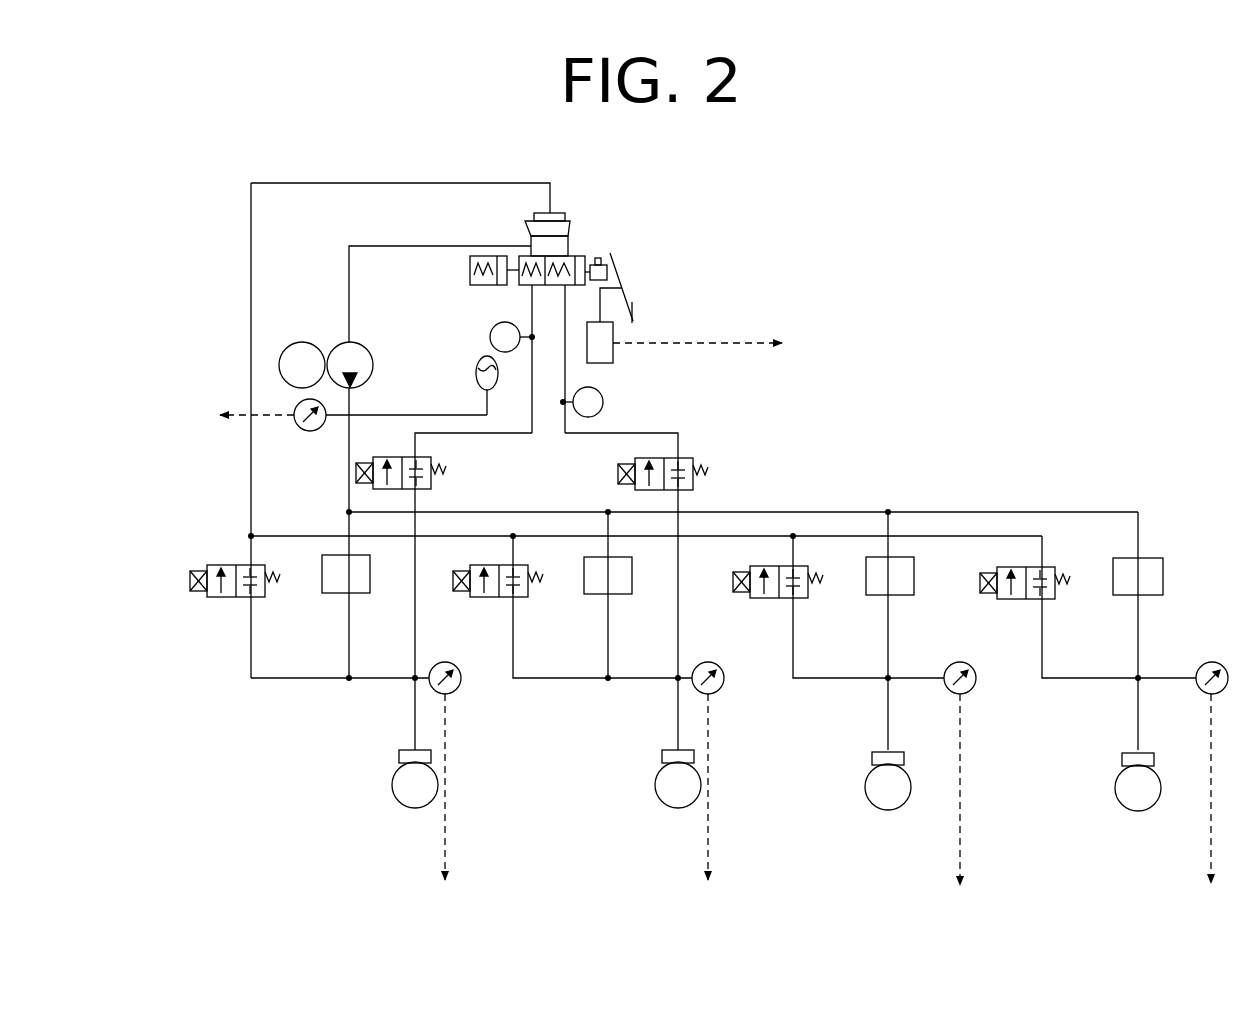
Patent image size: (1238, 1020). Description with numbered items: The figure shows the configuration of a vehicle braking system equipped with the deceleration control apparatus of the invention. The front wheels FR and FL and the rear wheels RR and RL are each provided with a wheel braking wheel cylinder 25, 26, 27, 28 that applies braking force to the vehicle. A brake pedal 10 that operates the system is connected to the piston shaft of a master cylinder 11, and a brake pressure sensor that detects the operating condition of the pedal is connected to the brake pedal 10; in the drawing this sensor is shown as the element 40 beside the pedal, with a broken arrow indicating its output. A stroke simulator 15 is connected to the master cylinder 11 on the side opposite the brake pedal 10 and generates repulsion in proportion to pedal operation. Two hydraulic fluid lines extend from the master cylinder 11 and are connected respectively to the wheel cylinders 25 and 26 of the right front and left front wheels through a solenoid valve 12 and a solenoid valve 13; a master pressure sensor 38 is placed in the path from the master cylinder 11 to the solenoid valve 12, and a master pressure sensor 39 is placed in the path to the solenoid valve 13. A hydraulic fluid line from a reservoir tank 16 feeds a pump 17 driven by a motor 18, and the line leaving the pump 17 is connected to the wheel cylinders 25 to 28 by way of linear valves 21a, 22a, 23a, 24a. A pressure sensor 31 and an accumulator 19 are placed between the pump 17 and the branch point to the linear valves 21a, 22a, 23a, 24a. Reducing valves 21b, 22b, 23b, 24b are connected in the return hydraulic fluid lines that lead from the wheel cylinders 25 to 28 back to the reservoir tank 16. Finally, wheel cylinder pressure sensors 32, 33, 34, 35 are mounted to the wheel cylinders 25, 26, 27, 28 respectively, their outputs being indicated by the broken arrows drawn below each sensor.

The brake pedal 10 is at (618, 272).
The master cylinder 11 is at (522, 288).
The solenoid valve 12 is at (447, 470).
The solenoid valve 13 is at (697, 470).
The stroke simulator 15 is at (470, 275).
The reservoir tank 16 is at (570, 228).
The pump 17 is at (370, 352).
The motor 18 is at (297, 342).
The accumulator 19 is at (478, 378).
The linear valve 21a is at (333, 593).
The reducing valve 21b is at (213, 598).
The linear valve 22a is at (597, 594).
The reducing valve 22b is at (490, 597).
The linear valve 23a is at (876, 595).
The reducing valve 23b is at (772, 598).
The linear valve 24a is at (1125, 595).
The reducing valve 24b is at (1015, 598).
The wheel cylinder 25 is at (400, 755).
The wheel cylinder 26 is at (662, 755).
The wheel cylinder 27 is at (872, 757).
The wheel cylinder 28 is at (1123, 760).
The pressure sensor 31 is at (310, 432).
The wheel cylinder pressure sensor 32 is at (458, 690).
The wheel cylinder pressure sensor 33 is at (722, 690).
The wheel cylinder pressure sensor 34 is at (972, 690).
The wheel cylinder pressure sensor 35 is at (1212, 662).
The master pressure sensor 38 is at (490, 337).
The master pressure sensor 39 is at (603, 402).
The pedal stroke sensor 40 is at (613, 355).